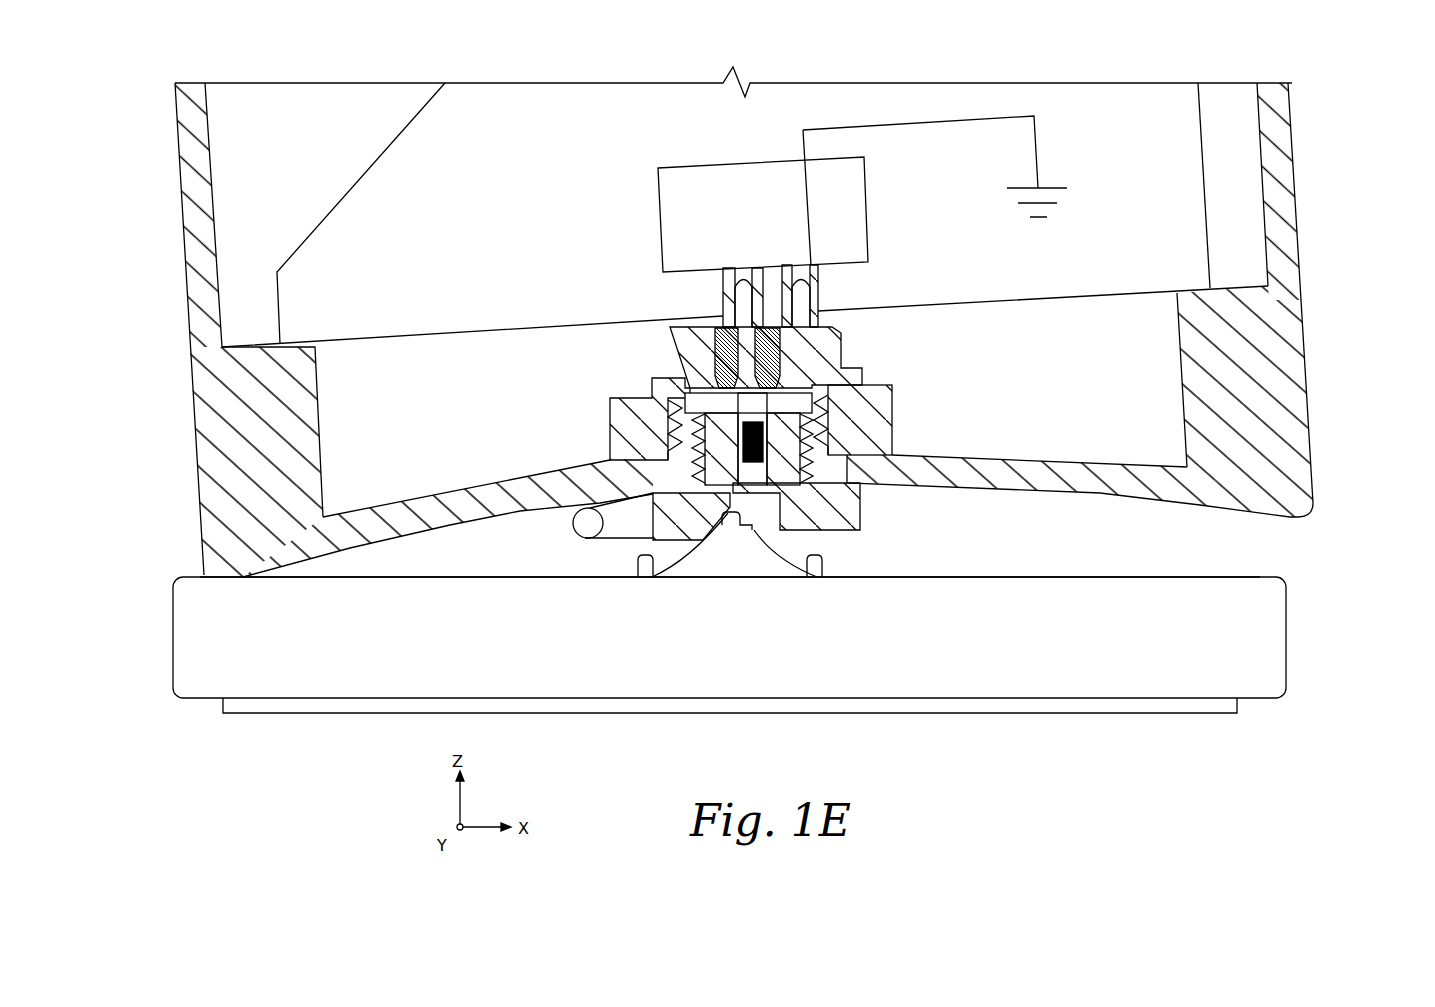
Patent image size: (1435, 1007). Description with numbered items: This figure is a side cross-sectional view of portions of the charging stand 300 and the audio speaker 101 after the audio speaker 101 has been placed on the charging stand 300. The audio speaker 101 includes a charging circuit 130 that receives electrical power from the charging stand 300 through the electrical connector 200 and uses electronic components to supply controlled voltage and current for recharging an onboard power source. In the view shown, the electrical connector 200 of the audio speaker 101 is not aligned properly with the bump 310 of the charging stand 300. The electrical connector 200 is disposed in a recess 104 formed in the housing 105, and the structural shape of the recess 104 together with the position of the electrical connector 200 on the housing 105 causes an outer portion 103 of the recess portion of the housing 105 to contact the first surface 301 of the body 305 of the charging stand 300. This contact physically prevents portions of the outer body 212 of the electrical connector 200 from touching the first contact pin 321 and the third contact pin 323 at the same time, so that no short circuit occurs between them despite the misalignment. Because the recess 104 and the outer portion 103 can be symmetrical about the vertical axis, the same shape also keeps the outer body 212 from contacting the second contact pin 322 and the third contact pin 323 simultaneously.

The audio speaker 101 is at (1320, 132).
The outer portion 103 is at (204, 548).
The recess 104 is at (957, 504).
The housing 105 is at (1290, 232).
The charging circuit 130 is at (760, 225).
The electrical connector 200 is at (874, 533).
The outer body 212 is at (862, 510).
The charging stand 300 is at (788, 618).
The first surface 301 is at (1130, 577).
The body 305 is at (1278, 636).
The bump 310 is at (697, 571).
The first contact pin 321 is at (636, 561).
The second contact pin 322 is at (823, 562).
The third contact pin 323 is at (733, 527).